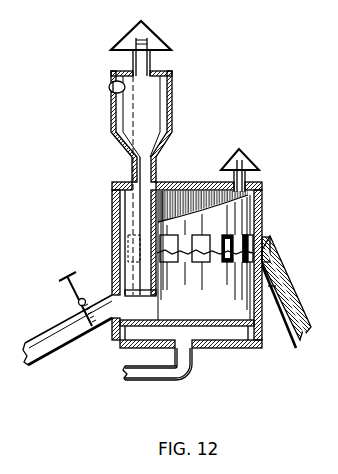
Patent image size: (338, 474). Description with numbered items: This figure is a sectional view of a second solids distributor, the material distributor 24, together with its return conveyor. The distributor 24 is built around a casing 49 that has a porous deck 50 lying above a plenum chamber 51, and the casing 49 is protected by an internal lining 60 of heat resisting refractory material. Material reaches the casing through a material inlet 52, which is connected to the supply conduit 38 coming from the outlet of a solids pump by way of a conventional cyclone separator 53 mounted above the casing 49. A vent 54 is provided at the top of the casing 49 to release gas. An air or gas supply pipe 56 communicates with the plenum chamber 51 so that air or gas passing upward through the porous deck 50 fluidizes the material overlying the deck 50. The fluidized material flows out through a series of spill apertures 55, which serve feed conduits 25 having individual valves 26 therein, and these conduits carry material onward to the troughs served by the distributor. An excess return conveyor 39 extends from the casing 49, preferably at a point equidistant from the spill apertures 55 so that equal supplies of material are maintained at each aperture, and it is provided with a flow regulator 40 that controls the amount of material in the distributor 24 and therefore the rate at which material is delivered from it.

The material distributor 24 is at (104, 222).
The feed conduit 25 is at (296, 292).
The valve 26 is at (280, 247).
The conduit 38 is at (109, 88).
The excess return conveyor 39 is at (47, 333).
The flow regulator 40 is at (64, 276).
The casing 49 is at (197, 182).
The porous deck 50 is at (205, 320).
The plenum chamber 51 is at (232, 333).
The material inlet 52 is at (132, 205).
The cyclone separator 53 is at (173, 90).
The vent 54 is at (237, 153).
The spill aperture 55 is at (166, 240).
The air or gas supply pipe 56 is at (140, 382).
The internal lining 60 is at (263, 208).